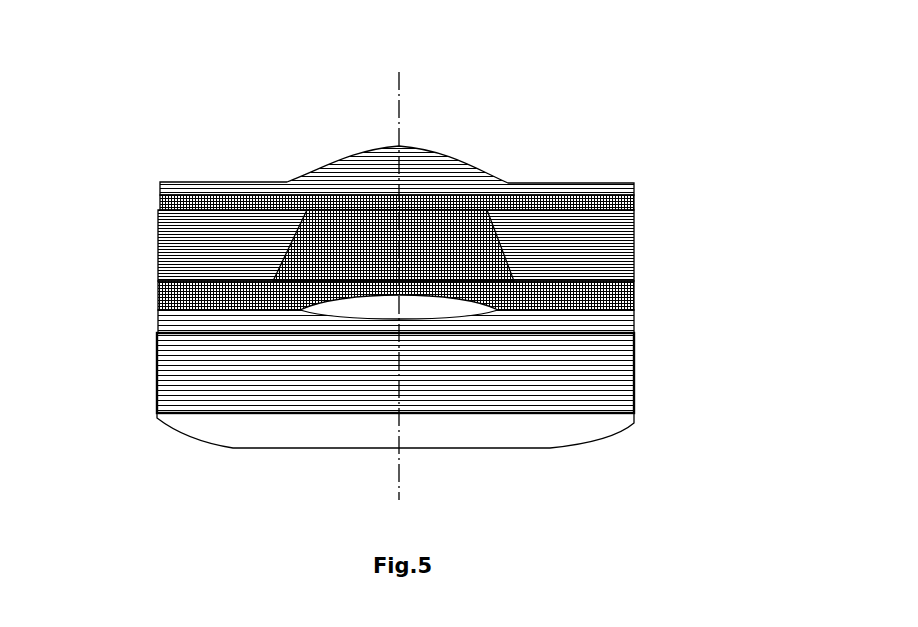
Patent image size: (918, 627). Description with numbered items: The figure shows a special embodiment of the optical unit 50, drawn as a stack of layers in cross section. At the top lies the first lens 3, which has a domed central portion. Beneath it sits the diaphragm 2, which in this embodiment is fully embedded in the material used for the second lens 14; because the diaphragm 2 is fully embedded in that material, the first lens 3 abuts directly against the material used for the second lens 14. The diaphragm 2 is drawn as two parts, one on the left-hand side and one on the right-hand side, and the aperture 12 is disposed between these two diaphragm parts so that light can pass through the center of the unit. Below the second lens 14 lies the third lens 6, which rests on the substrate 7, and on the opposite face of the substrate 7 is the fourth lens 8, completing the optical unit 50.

The optical unit 50 is at (152, 170).
The first lens 3 is at (485, 170).
The aperture 12 is at (442, 225).
The diaphragm 2 is at (588, 258).
The second lens 14 is at (634, 297).
The third lens 6 is at (610, 322).
The substrate 7 is at (610, 360).
The fourth lens 8 is at (588, 427).